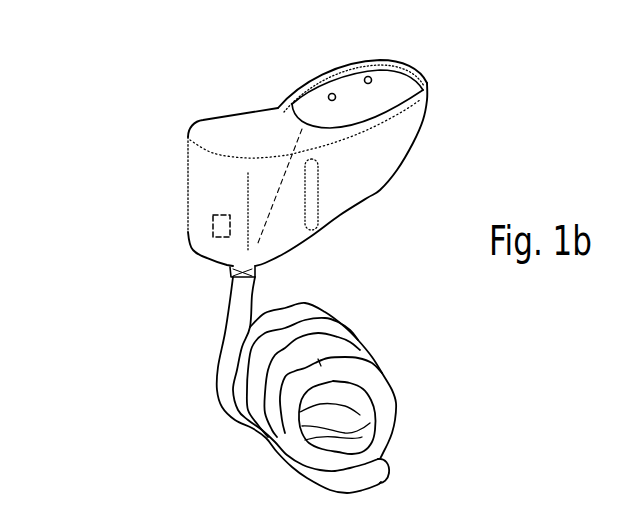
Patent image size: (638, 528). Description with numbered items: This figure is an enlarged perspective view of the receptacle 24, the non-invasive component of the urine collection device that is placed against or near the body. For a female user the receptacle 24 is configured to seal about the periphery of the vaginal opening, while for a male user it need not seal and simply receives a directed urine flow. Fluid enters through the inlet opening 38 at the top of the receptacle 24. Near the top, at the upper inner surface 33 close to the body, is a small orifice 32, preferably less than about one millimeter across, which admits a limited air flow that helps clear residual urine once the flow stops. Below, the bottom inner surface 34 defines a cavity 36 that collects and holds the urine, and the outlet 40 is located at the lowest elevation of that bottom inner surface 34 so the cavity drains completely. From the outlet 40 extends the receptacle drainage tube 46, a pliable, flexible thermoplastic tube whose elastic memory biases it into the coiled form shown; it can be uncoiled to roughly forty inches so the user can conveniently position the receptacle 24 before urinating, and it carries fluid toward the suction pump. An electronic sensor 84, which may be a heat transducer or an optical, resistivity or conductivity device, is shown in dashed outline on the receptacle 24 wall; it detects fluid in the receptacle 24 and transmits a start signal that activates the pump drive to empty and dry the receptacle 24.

The receptacle 24 is at (152, 125).
The small orifice 32 is at (336, 96).
The upper inner surface 33 is at (371, 104).
The bottom inner surface 34 is at (303, 126).
The cavity 36 is at (337, 193).
The inlet opening 38 is at (428, 75).
The outlet 40 is at (238, 275).
The receptacle drainage tube 46 is at (300, 455).
The electronic sensor 84 is at (208, 242).